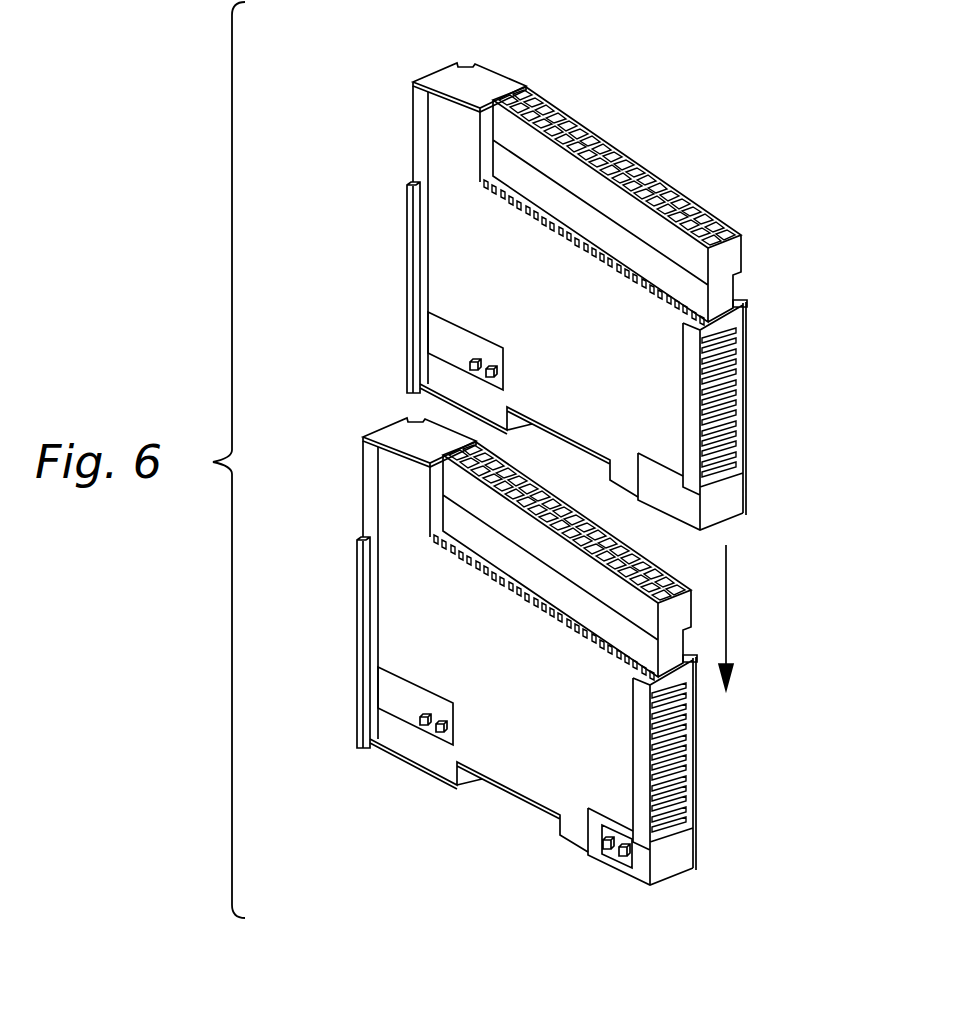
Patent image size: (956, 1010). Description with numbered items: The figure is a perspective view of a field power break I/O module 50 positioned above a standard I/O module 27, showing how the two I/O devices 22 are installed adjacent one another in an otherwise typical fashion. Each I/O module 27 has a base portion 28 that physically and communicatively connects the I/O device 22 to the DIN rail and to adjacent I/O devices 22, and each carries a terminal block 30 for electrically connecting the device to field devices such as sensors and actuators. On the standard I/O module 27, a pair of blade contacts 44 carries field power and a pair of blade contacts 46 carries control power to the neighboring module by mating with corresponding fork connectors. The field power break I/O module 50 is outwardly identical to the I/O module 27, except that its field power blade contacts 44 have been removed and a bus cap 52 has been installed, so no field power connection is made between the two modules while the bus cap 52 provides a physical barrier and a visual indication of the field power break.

The I/O device 22 is at (728, 206).
The I/O module 27 is at (467, 217).
The base portion 28 is at (432, 757).
The terminal block 30 is at (593, 190).
The blade contacts 44 is at (622, 862).
The blade contacts 46 is at (470, 362).
The field power break I/O module 50 is at (395, 105).
The bus cap 52 is at (734, 506).